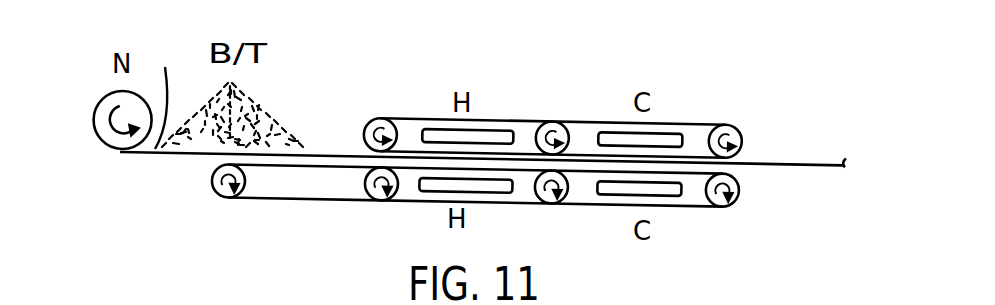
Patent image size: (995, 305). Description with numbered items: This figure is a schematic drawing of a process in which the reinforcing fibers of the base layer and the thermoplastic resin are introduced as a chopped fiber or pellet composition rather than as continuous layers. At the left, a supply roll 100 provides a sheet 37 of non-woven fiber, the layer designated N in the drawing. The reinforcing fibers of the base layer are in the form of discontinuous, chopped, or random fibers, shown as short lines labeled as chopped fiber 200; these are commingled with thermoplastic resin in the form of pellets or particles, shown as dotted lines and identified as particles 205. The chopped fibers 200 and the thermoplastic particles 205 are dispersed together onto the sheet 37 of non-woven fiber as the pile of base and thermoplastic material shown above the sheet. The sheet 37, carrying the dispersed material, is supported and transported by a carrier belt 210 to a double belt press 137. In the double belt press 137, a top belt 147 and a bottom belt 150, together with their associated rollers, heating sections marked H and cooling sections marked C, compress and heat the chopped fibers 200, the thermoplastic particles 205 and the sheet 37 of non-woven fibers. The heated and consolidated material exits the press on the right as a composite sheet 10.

The composite sheet 10 is at (793, 165).
The sheet of non-woven fiber 37 is at (166, 93).
The supply roll 100 is at (93, 120).
The double belt press 137 is at (727, 99).
The top belt 147 is at (534, 118).
The bottom belt 150 is at (521, 206).
The chopped fiber 200 is at (275, 110).
The particles of thermoplastic resin 205 is at (252, 78).
The carrier belt 210 is at (317, 201).